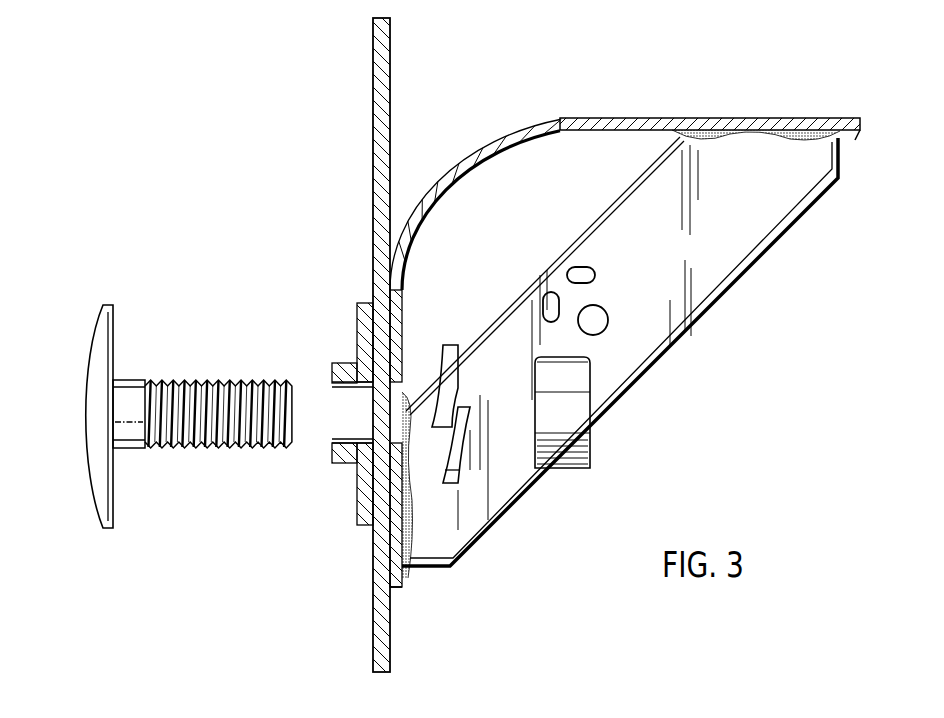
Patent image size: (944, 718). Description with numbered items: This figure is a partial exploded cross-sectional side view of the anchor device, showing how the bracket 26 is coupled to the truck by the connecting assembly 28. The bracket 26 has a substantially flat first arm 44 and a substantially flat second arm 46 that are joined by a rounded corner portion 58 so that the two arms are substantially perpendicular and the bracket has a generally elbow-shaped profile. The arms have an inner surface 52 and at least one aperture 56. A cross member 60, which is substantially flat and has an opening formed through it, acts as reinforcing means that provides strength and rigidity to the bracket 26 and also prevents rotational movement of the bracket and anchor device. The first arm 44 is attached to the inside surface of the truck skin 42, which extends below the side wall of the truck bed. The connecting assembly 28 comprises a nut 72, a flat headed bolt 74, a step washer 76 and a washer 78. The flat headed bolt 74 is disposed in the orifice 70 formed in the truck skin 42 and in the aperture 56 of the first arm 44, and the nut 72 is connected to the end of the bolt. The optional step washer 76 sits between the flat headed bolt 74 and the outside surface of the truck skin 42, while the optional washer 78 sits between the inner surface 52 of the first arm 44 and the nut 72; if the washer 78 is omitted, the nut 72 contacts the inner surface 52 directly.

The bracket 26 is at (507, 108).
The connecting assembly 28 is at (254, 252).
The truck skin 42 is at (378, 107).
The first arm 44 is at (403, 385).
The second arm 46 is at (765, 119).
The inner surface 52 is at (855, 138).
The aperture 56 is at (675, 121).
The corner portion 58 is at (468, 165).
The cross member 60 is at (695, 287).
The orifice 70 is at (382, 418).
The nut 72 is at (577, 447).
The flat headed bolt 74 is at (100, 323).
The step washer 76 is at (363, 472).
The washer 78 is at (452, 465).